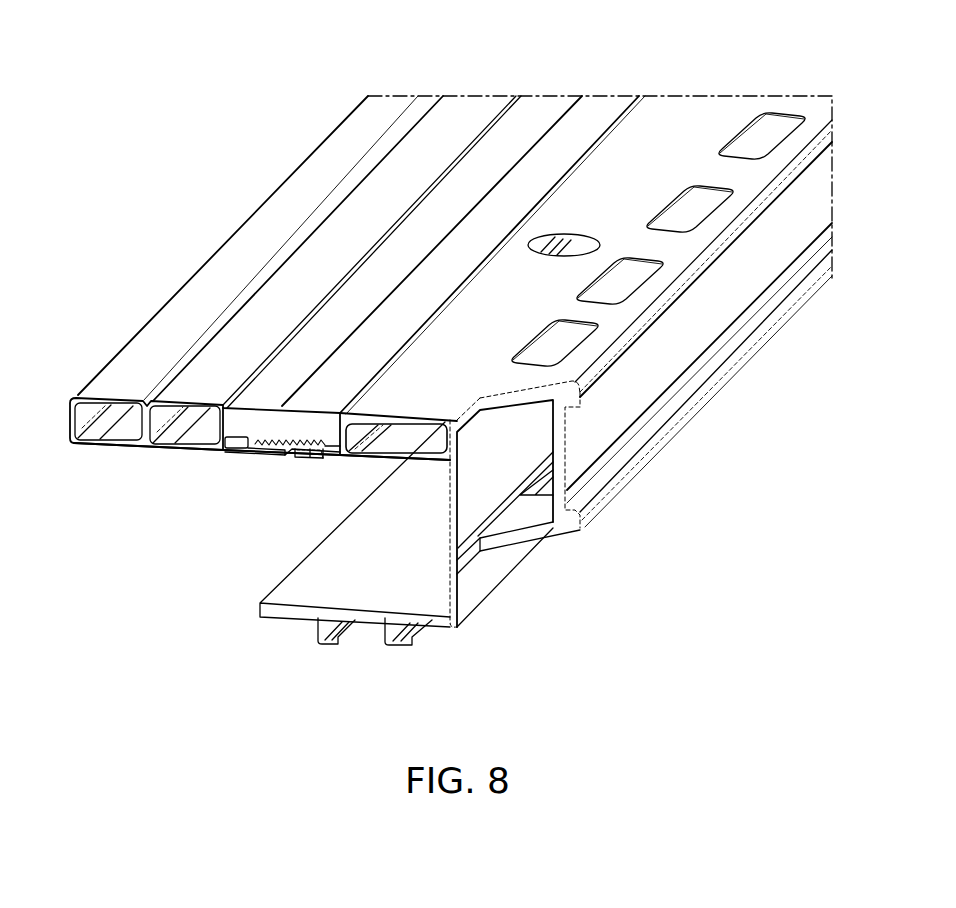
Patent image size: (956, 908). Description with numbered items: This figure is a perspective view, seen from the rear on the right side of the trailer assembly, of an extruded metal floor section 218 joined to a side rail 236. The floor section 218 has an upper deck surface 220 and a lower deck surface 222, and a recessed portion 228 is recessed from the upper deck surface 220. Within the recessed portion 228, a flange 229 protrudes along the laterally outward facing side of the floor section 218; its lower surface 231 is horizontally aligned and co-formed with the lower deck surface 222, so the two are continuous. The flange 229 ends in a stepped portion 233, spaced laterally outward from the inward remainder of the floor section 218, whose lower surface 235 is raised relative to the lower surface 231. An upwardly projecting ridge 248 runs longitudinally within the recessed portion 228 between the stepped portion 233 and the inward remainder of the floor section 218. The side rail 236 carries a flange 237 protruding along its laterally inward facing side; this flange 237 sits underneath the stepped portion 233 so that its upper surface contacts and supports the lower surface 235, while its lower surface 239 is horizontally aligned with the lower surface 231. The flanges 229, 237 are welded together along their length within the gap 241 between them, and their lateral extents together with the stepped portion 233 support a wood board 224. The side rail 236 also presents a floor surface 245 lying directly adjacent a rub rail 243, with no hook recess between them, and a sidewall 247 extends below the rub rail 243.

The floor section 218 is at (270, 212).
The upper deck surface 220 is at (163, 338).
The lower deck surface 222 is at (90, 448).
The wood board 224 is at (487, 173).
The floor surface 245 is at (587, 193).
The ridge 248 is at (253, 440).
The recessed portion 228 is at (294, 430).
The flange 229 is at (223, 450).
The lower surface of the flange 231 is at (242, 458).
The gap 241 is at (286, 458).
The lower surface of the flange 239 is at (298, 464).
The stepped portion 233 is at (304, 457).
The lower surface of the stepped portion 235 is at (316, 455).
The flange 237 is at (323, 452).
The rub rail 243 is at (617, 470).
The sidewall 247 is at (468, 598).
The side rail 236 is at (483, 558).